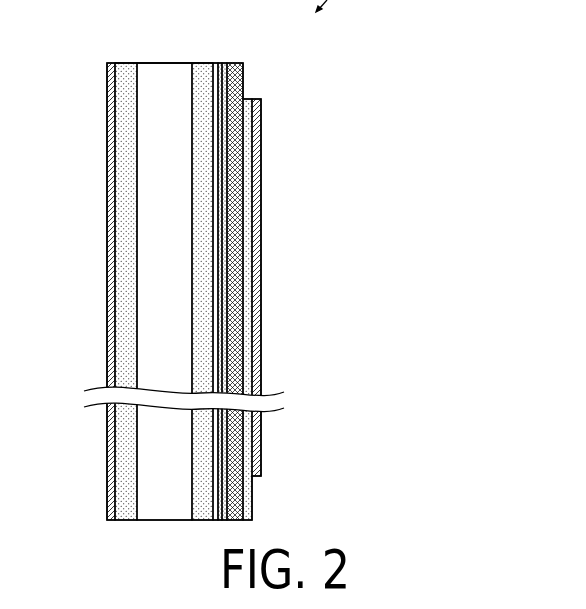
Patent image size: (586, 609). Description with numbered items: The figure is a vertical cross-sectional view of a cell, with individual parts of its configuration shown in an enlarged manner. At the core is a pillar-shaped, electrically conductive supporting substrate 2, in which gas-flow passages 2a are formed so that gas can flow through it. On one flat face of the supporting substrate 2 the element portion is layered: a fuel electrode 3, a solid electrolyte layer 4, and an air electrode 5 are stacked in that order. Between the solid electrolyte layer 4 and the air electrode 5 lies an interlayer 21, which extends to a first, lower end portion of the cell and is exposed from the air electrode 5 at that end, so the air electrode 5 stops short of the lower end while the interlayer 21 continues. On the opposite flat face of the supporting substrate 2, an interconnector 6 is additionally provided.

The supporting substrate 2 is at (200, 98).
The gas-flow passage 2a is at (168, 68).
The fuel electrode 3 is at (218, 163).
The solid electrolyte layer 4 is at (233, 222).
The interlayer 21 is at (248, 261).
The air electrode 5 is at (257, 294).
The interconnector 6 is at (107, 121).